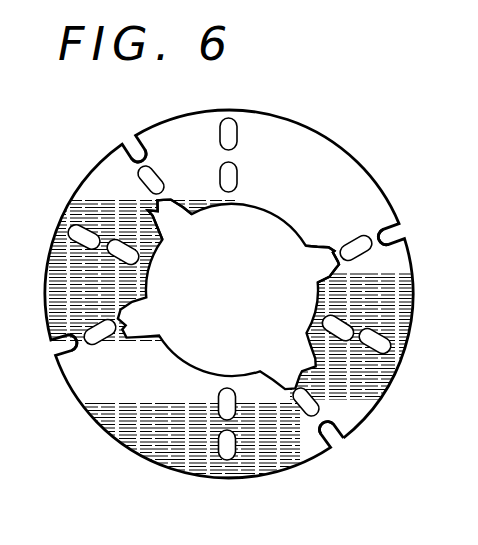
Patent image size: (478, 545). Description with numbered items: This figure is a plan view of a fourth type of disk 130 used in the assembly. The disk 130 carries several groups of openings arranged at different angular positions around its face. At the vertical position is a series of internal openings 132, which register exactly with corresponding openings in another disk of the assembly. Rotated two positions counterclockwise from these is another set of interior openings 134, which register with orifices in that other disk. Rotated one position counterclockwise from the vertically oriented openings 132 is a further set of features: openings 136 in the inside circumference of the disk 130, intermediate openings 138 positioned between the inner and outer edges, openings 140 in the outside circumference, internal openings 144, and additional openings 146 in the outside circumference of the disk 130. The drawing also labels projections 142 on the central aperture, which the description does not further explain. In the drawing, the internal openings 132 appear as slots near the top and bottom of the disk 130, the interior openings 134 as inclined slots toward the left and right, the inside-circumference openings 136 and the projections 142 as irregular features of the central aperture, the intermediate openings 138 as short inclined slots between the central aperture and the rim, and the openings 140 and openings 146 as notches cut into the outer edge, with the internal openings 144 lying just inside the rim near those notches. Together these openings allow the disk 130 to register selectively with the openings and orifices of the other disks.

The disk 130 is at (303, 124).
The internal openings 132 is at (236, 116).
The interior openings 134 is at (152, 264).
The openings in the inside circumference 136 is at (183, 224).
The intermediate openings 138 is at (153, 168).
The openings in the outside circumference 140 is at (129, 150).
The aperture projections 142 is at (318, 258).
The internal openings 144 is at (355, 238).
The openings in the outside circumference 146 is at (397, 243).